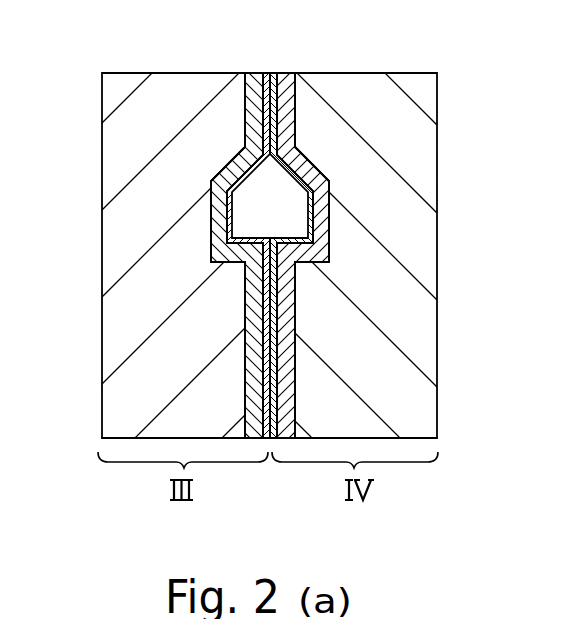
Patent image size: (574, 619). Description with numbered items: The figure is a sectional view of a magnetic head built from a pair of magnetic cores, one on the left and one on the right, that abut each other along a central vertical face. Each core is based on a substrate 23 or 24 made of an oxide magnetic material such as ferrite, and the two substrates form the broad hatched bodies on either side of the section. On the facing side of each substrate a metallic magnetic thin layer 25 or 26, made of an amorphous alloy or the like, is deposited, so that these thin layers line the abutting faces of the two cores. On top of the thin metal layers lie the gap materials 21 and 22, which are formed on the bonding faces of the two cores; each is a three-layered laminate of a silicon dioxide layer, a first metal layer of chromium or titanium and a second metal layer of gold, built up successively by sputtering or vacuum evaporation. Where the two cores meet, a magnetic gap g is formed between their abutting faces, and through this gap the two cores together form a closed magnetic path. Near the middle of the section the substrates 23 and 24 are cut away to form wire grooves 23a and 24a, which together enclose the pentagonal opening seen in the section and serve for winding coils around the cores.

The gap material 21 is at (262, 93).
The gap material 22 is at (298, 88).
The substrate 23 is at (120, 313).
The wire groove 23a is at (211, 221).
The substrate 24 is at (403, 320).
The wire groove 24a is at (329, 224).
The metallic magnetic thin layer 25 is at (250, 128).
The metallic magnetic thin layer 26 is at (285, 122).
The magnetic gap g is at (270, 74).